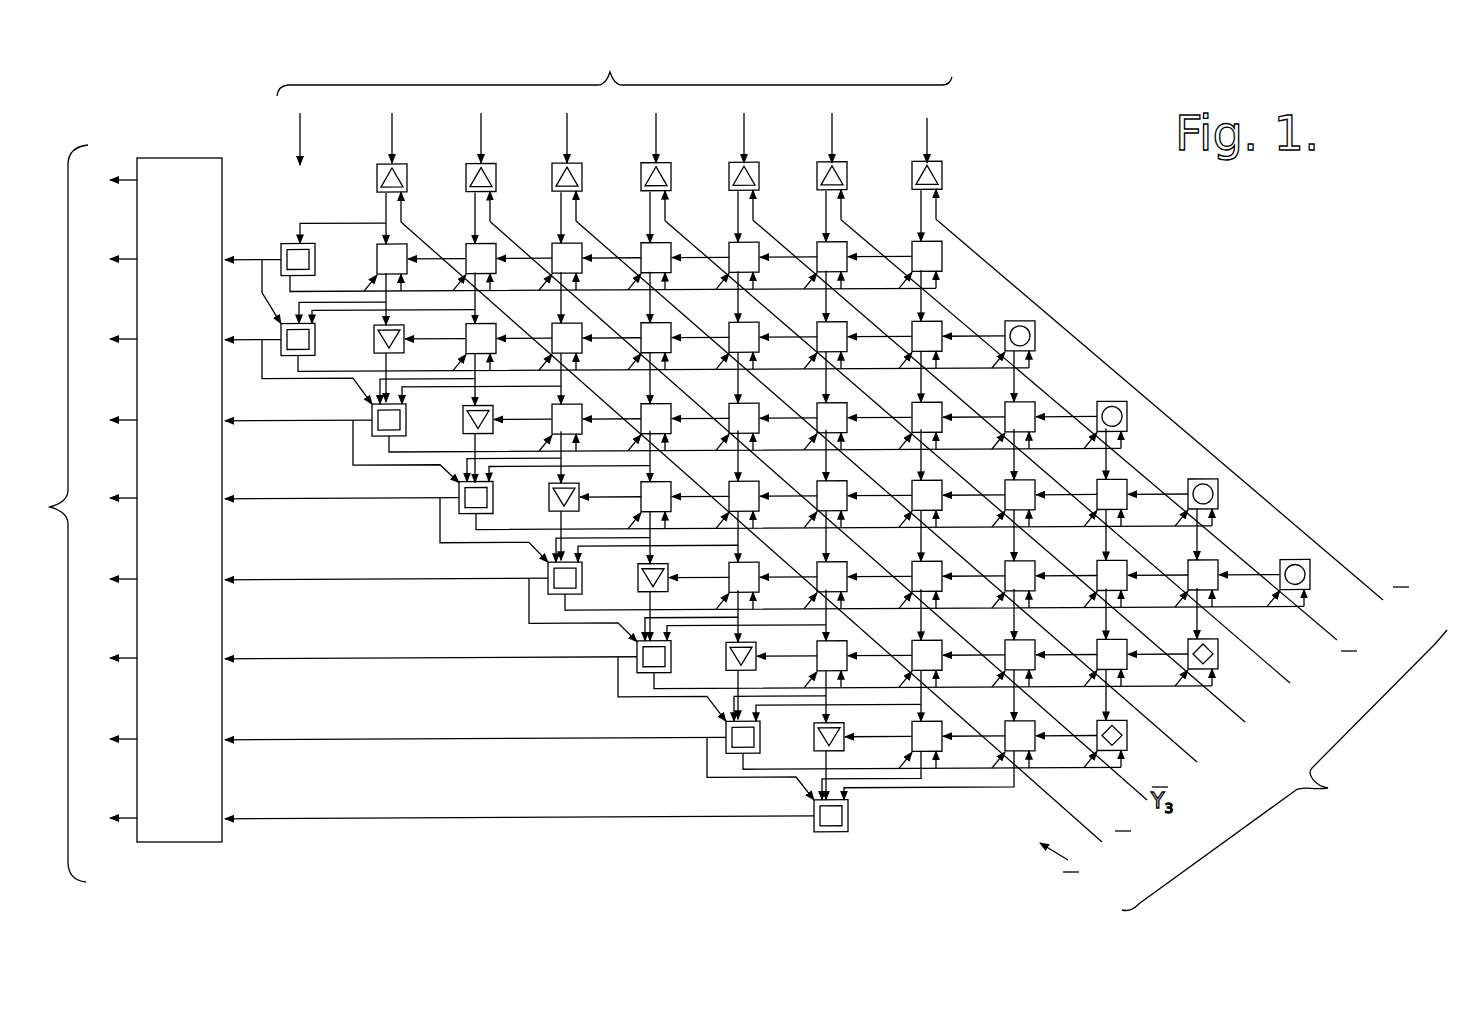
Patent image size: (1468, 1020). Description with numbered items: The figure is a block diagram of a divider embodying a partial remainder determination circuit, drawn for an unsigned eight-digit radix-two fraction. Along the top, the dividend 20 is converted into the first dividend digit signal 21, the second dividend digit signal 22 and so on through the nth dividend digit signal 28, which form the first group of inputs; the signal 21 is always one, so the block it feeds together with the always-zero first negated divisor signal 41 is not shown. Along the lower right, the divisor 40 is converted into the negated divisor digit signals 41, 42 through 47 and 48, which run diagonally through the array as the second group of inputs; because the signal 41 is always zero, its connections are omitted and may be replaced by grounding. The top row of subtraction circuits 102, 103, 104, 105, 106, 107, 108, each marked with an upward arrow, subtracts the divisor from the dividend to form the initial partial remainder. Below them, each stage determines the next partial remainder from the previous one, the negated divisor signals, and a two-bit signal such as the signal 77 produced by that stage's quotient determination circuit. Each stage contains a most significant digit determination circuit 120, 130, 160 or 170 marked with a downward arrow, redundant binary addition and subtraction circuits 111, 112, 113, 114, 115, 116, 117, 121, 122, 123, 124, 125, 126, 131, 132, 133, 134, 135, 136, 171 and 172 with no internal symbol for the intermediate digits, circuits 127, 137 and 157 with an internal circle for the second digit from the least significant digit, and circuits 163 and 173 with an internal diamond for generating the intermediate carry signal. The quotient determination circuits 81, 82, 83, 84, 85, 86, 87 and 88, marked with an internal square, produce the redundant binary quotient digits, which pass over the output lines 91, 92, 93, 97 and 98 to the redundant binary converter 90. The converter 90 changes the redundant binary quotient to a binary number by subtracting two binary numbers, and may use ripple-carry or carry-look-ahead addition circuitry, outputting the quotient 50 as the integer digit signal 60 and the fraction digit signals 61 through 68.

The dividend 20 is at (606, 69).
The signal X1 21 is at (300, 128).
The signal X2 22 is at (481, 130).
The signal Xn 28 is at (940, 124).
The divisor 40 is at (1284, 770).
The signal Y1-bar 41 is at (1078, 853).
The signal Y2-bar 42 is at (1079, 825).
The signal Yn-1-bar 47 is at (1334, 638).
The signal Yn-bar 48 is at (1346, 566).
The quotient 50 is at (50, 500).
The signal Z0 60 is at (119, 182).
The signal Z1 61 is at (119, 261).
The signal Zn 68 is at (124, 843).
The 2-bit signal 77 is at (771, 771).
The quotient determination circuit 81 is at (315, 259).
The quotient determination circuit 82 is at (315, 339).
The quotient determination circuit 83 is at (406, 420).
The quotient determination circuit 84 is at (458, 493).
The quotient determination circuit 85 is at (582, 579).
The quotient determination circuit 86 is at (671, 658).
The quotient determination circuit 87 is at (760, 739).
The quotient determination circuit 88 is at (848, 818).
The redundant binary converter 90 is at (189, 157).
The quotient digit output line 91 is at (247, 257).
The quotient digit output line 92 is at (244, 337).
The quotient digit output line 93 is at (278, 419).
The quotient digit output line 97 is at (678, 738).
The quotient digit output line 98 is at (767, 817).
The subtraction circuit 102 is at (406, 166).
The subtraction circuit 103 is at (495, 166).
The subtraction circuit 104 is at (581, 167).
The subtraction circuit 105 is at (670, 167).
The subtraction circuit 106 is at (758, 168).
The subtraction circuit 107 is at (846, 168).
The subtraction circuit 108 is at (941, 169).
The redundant binary addition and subtraction circuit 111 is at (405, 240).
The redundant binary addition and subtraction circuit 112 is at (494, 240).
The redundant binary addition and subtraction circuit 113 is at (580, 241).
The redundant binary addition and subtraction circuit 114 is at (669, 241).
The redundant binary addition and subtraction circuit 115 is at (757, 242).
The redundant binary addition and subtraction circuit 116 is at (845, 242).
The redundant binary addition and subtraction circuit 117 is at (940, 243).
The most significant digit determination circuit 120 is at (404, 327).
The redundant binary addition and subtraction circuit 121 is at (495, 324).
The redundant binary addition and subtraction circuit 122 is at (582, 325).
The redundant binary addition and subtraction circuit 123 is at (671, 325).
The redundant binary addition and subtraction circuit 124 is at (760, 326).
The redundant binary addition and subtraction circuit 125 is at (849, 326).
The redundant binary addition and subtraction circuit 126 is at (943, 327).
The second-from-least-significant digit determination circuit 127 is at (1036, 328).
The most significant digit determination circuit 130 is at (494, 407).
The redundant binary addition and subtraction circuit 131 is at (583, 405).
The redundant binary addition and subtraction circuit 132 is at (672, 405).
The redundant binary addition and subtraction circuit 133 is at (760, 406).
The redundant binary addition and subtraction circuit 134 is at (848, 406).
The redundant binary addition and subtraction circuit 135 is at (943, 406).
The redundant binary addition and subtraction circuit 136 is at (1037, 405).
The second-from-least-significant digit determination circuit 137 is at (1128, 405).
The second-from-least-significant digit determination circuit 157 is at (1301, 563).
The most significant digit determination circuit 160 is at (757, 647).
The intermediate carry signal generating circuit 163 is at (1228, 673).
The most significant digit determination circuit 170 is at (846, 728).
The redundant binary addition and subtraction circuit 171 is at (943, 725).
The redundant binary addition and subtraction circuit 172 is at (1037, 725).
The intermediate carry signal generating circuit 173 is at (1128, 725).